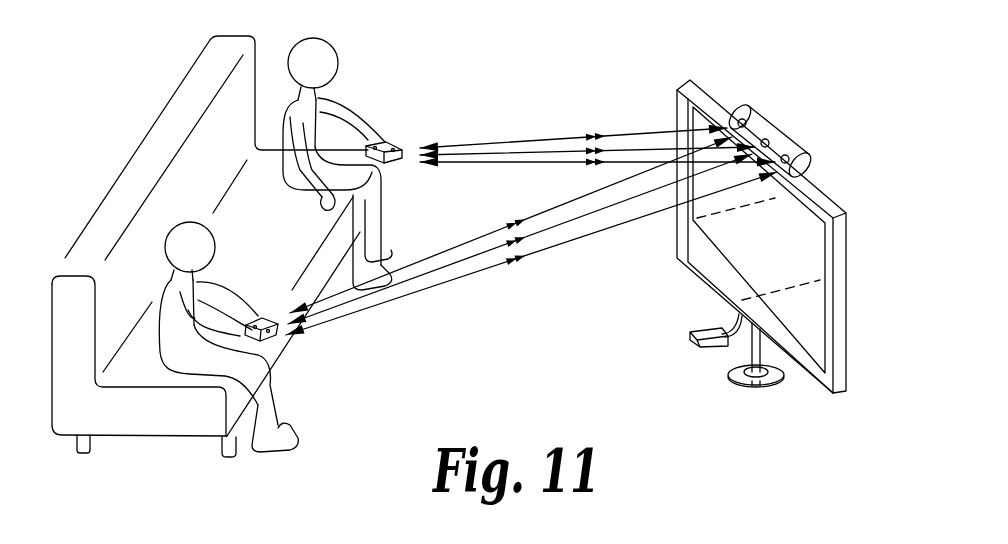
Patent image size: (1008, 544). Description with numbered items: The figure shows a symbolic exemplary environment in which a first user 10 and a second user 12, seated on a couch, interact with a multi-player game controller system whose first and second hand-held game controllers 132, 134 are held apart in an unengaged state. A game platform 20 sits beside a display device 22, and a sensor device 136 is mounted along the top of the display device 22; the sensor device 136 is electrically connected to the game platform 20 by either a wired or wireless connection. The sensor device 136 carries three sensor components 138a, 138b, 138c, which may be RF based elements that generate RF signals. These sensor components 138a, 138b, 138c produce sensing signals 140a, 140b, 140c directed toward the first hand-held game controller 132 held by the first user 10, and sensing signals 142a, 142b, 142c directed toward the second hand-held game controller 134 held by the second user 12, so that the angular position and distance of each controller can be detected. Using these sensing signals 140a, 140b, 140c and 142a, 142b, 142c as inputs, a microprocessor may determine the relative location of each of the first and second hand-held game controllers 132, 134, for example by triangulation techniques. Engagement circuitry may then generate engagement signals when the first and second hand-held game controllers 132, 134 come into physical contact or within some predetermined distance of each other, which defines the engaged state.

The first user 10 is at (327, 48).
The second user 12 is at (213, 238).
The game platform 20 is at (712, 349).
The display device 22 is at (752, 254).
The first hand-held game controller 132 is at (395, 143).
The second hand-held game controller 134 is at (273, 342).
The sensor device 136 is at (808, 167).
The sensor component 138a is at (739, 112).
The sensor component 138b is at (769, 134).
The sensor component 138c is at (791, 155).
The sensing signal 140a is at (584, 137).
The sensing signal 140b is at (548, 151).
The sensing signal 140c is at (508, 161).
The sensing signal 142a is at (481, 238).
The sensing signal 142b is at (447, 267).
The sensing signal 142c is at (421, 292).